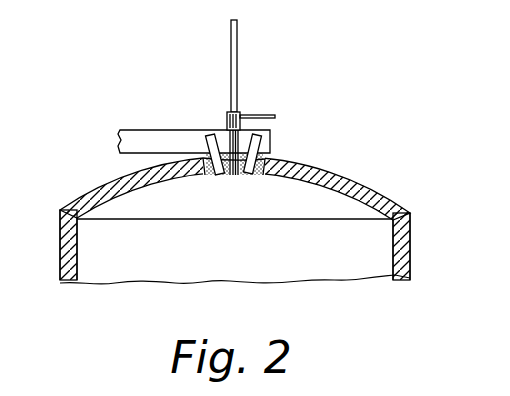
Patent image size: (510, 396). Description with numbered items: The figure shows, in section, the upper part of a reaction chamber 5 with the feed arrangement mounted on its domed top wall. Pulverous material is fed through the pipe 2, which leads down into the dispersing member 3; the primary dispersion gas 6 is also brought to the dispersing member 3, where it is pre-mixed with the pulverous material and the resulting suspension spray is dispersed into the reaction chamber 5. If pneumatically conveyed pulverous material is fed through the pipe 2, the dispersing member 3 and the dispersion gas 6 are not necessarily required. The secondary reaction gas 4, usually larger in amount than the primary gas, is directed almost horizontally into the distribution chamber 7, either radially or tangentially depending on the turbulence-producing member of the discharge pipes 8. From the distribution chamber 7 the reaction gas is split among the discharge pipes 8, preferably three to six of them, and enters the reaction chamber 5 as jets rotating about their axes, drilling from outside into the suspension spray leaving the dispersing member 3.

The pipe 2 is at (236, 90).
The dispersing member 3 is at (228, 121).
The secondary reaction gas 4 is at (115, 143).
The reaction chamber 5 is at (327, 215).
The primary dispersion gas 6 is at (287, 117).
The distribution chamber 7 is at (266, 143).
The discharge pipes 8 is at (270, 150).